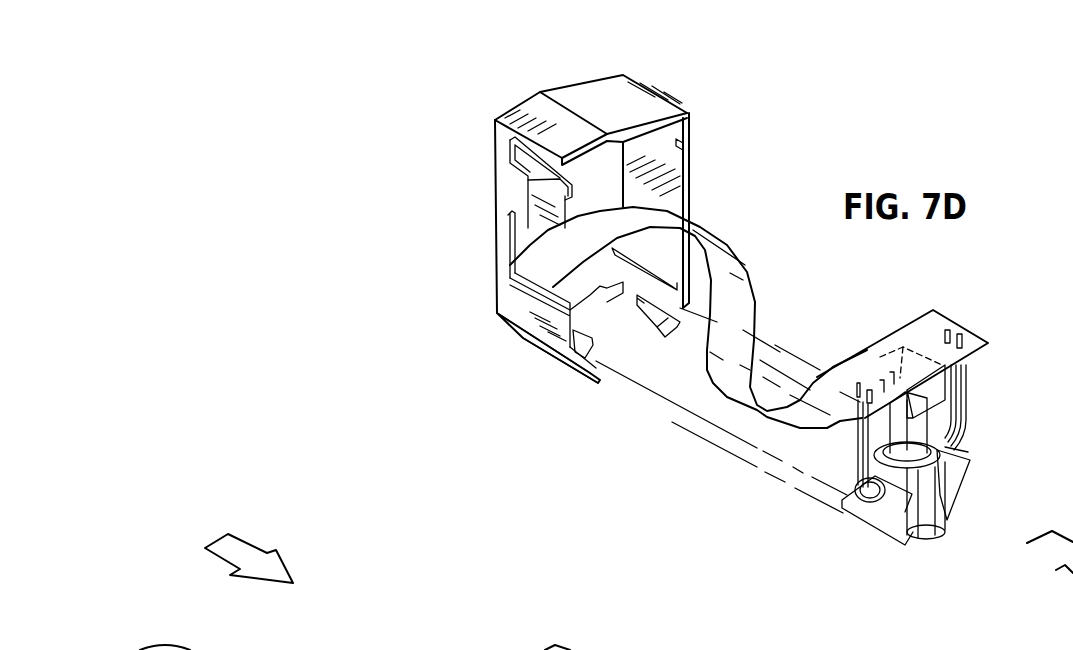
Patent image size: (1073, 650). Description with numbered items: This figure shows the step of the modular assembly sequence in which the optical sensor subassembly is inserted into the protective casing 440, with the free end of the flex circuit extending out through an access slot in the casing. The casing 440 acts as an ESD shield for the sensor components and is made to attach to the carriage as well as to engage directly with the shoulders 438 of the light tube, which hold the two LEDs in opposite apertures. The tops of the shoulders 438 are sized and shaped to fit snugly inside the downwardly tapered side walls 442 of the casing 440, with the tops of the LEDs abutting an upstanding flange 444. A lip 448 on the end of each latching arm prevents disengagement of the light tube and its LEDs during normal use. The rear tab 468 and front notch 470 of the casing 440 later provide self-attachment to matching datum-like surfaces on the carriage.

The protective casing 440 is at (627, 105).
The front notch 470 is at (687, 146).
The rear tab 468 is at (548, 201).
The downwardly tapered side walls 442 is at (525, 345).
The upstanding flange 444 is at (600, 343).
The lip 448 is at (672, 327).
The shoulders 438 is at (957, 477).